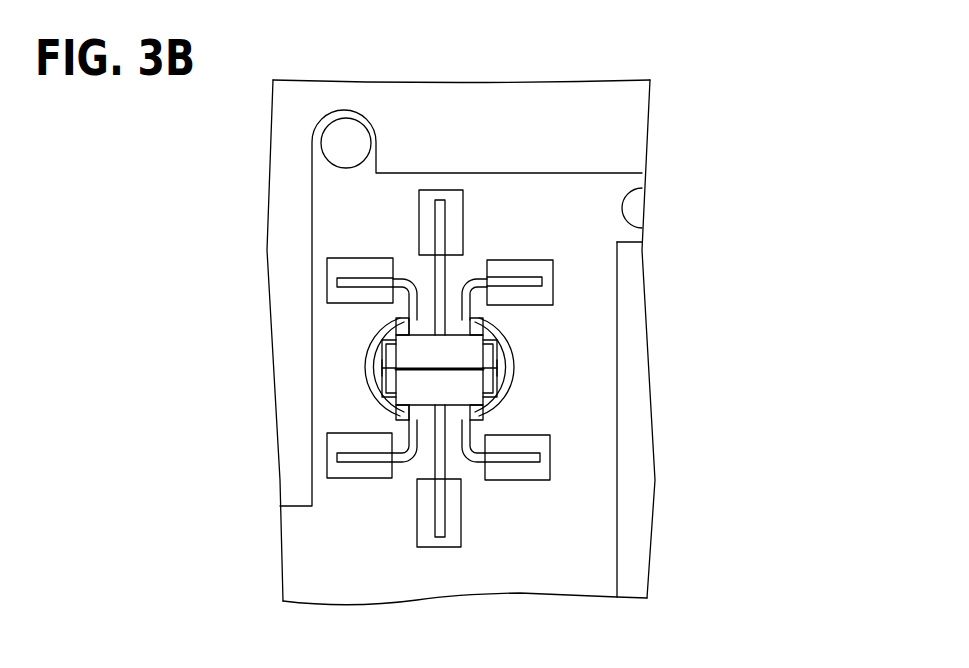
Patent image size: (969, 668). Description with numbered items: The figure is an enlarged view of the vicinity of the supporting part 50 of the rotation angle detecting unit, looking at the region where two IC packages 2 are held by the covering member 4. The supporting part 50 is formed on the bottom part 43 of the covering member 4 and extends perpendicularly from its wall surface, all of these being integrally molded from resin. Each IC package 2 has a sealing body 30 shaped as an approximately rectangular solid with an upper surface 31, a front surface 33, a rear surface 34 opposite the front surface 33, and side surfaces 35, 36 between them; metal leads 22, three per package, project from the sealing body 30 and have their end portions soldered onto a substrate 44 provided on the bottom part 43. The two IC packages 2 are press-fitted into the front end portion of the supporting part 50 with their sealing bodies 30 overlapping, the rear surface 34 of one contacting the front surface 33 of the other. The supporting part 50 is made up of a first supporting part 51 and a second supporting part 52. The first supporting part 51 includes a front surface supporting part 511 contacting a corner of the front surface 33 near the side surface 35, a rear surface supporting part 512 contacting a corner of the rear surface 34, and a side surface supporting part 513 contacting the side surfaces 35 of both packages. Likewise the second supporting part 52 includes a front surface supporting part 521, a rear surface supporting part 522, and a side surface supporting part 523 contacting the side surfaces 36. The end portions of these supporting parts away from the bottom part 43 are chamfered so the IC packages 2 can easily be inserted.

The IC package 2 is at (417, 333).
The covering member 4 is at (287, 127).
The bottom part 43 is at (287, 157).
The substrate 44 is at (573, 497).
The lead 22 is at (344, 278).
The sealing body 30 is at (473, 343).
The upper surface 31 is at (447, 350).
The front surface 33 is at (410, 430).
The rear surface 34 is at (418, 300).
The side surface 35 is at (378, 350).
The side surface 36 is at (500, 352).
The supporting part 50 is at (392, 330).
The first supporting part 51 is at (371, 372).
The front surface supporting part 511 is at (392, 424).
The rear surface supporting part 512 is at (396, 322).
The side surface supporting part 513 is at (380, 386).
The second supporting part 52 is at (505, 372).
The front surface supporting part 521 is at (488, 422).
The rear surface supporting part 522 is at (488, 318).
The side surface supporting part 523 is at (505, 386).